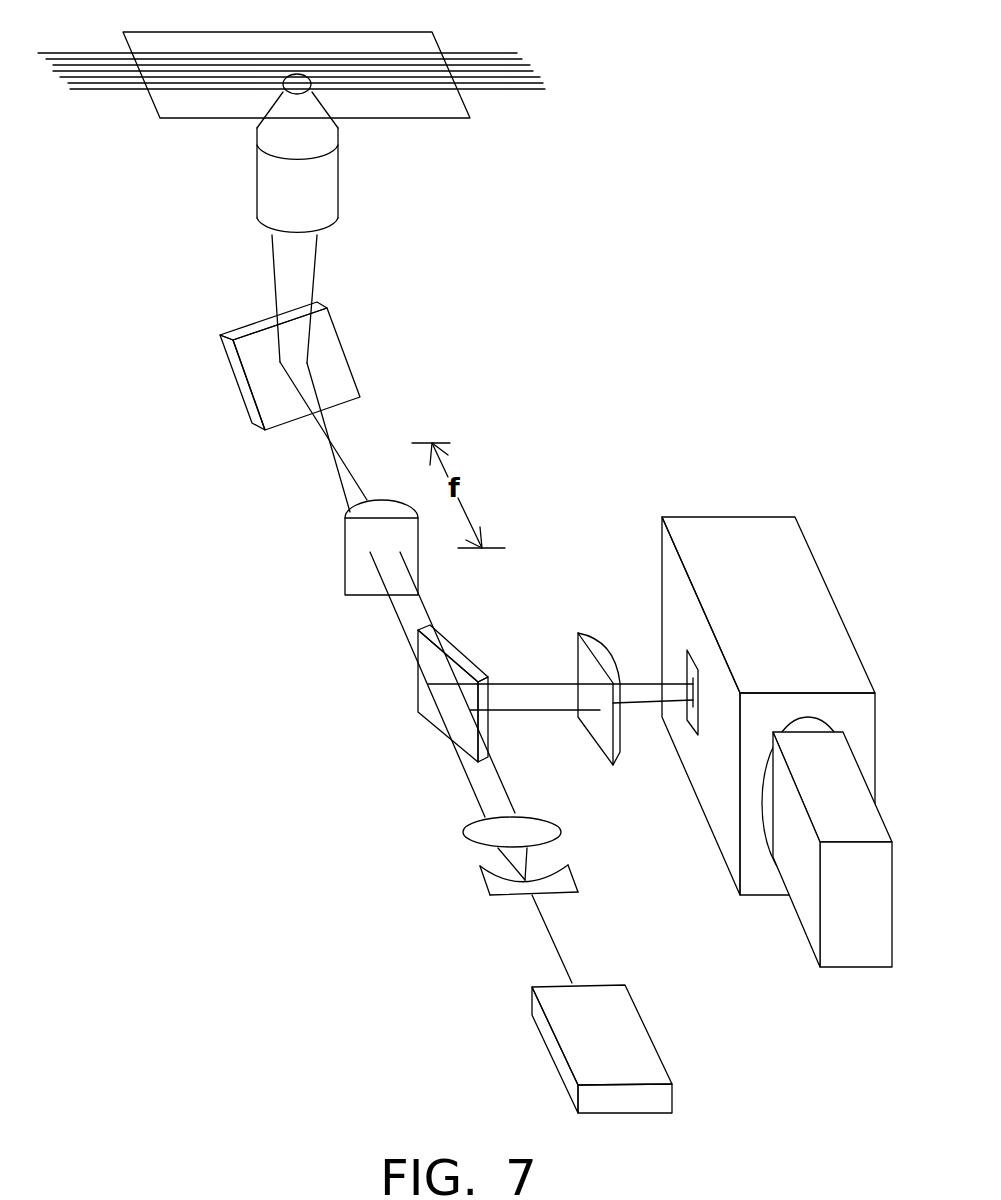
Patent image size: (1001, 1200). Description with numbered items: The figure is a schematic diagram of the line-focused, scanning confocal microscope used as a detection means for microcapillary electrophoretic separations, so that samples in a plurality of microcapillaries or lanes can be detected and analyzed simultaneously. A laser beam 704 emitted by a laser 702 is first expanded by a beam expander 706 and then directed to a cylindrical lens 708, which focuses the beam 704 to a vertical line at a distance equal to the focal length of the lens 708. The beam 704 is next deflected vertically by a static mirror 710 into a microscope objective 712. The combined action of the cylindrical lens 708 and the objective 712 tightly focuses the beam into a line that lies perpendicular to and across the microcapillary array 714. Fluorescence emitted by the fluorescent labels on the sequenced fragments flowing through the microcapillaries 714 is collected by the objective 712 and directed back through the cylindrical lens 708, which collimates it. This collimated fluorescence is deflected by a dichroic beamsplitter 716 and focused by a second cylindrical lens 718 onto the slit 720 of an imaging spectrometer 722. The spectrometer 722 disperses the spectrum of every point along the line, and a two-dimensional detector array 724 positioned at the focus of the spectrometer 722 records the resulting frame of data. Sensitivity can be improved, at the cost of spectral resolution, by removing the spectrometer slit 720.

The laser 702 is at (550, 1027).
The laser beam 704 is at (552, 930).
The beam expander 706 is at (469, 857).
The cylindrical lens 708 is at (352, 547).
The static mirror 710 is at (257, 322).
The microscope objective 712 is at (323, 183).
The microcapillary array 714 is at (475, 52).
The dichroic beamsplitter 716 is at (458, 650).
The cylindrical lens 718 is at (585, 668).
The slit 720 is at (685, 677).
The imaging spectrometer 722 is at (792, 615).
The two-dimensional detector array 724 is at (860, 930).